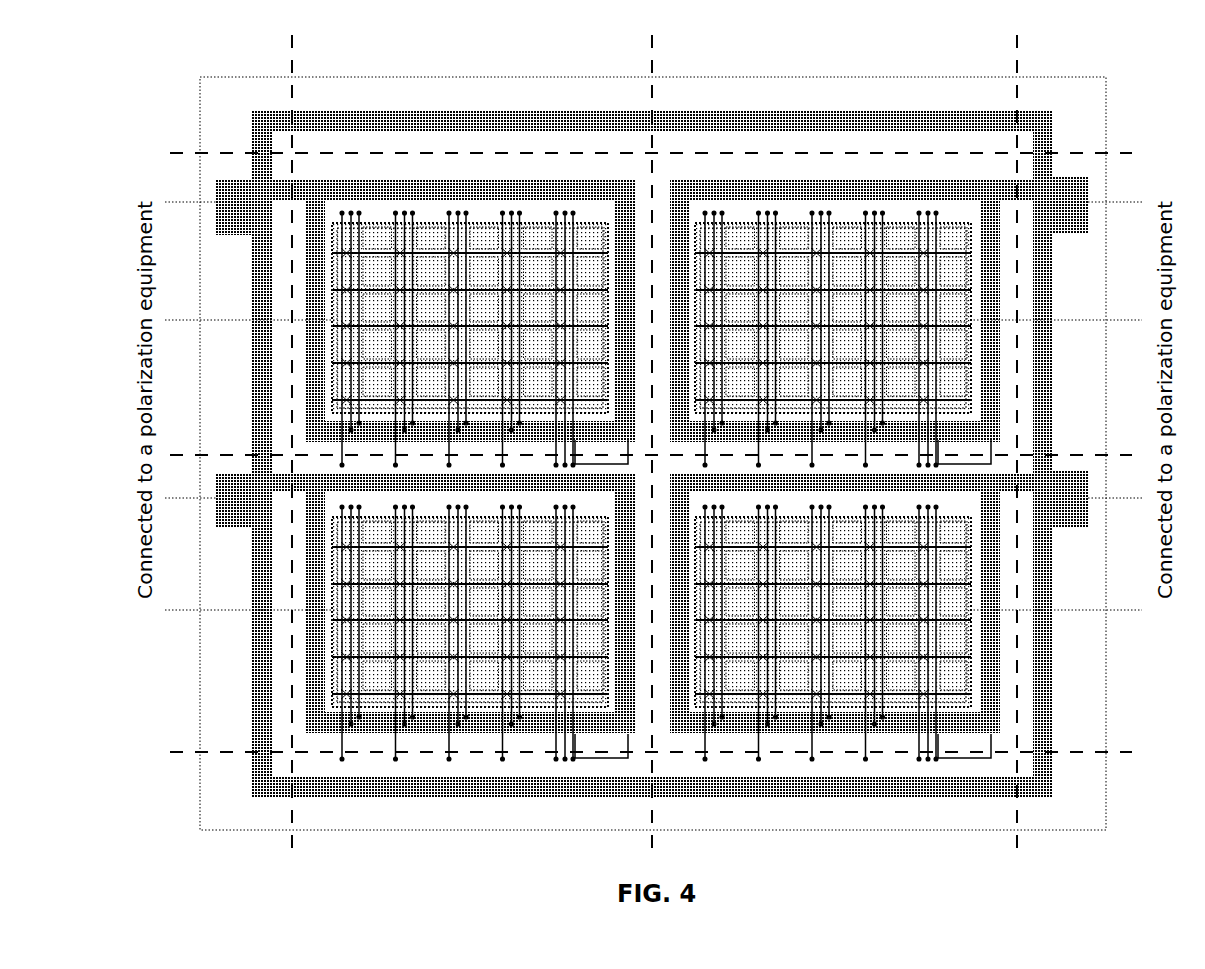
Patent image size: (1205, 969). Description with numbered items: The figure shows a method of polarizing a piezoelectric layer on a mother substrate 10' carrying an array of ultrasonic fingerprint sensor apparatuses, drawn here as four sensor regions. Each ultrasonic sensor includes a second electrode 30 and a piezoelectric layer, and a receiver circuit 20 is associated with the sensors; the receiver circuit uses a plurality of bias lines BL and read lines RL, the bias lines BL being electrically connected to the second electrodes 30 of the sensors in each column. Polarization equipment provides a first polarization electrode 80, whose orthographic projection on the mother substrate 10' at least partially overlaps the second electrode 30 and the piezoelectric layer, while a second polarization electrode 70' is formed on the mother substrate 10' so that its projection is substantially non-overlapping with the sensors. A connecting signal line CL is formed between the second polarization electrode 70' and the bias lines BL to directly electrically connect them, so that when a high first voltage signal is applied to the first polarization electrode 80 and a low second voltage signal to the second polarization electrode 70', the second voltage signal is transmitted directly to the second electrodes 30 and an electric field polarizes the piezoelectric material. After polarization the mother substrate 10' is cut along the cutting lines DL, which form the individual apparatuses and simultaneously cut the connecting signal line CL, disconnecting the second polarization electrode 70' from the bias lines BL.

The mother substrate 10' is at (675, 453).
The receiver circuit 20 is at (462, 213).
The second electrode 30 is at (594, 238).
The second polarization electrode 70' is at (470, 294).
The first polarization electrode 80 is at (590, 222).
The cutting line DL is at (653, 52).
The read line RL is at (338, 192).
The bias line BL is at (572, 215).
The connecting signal line CL is at (968, 463).